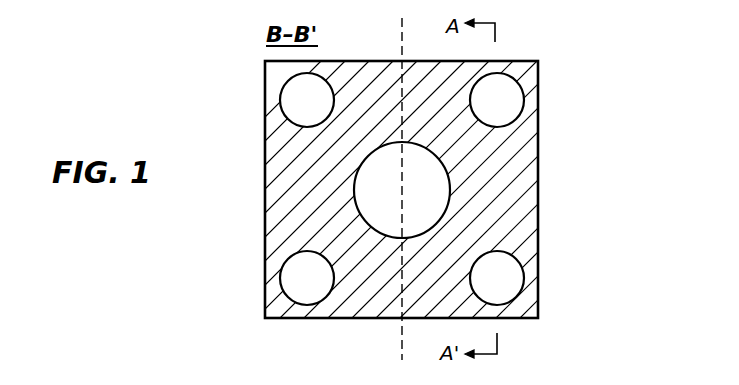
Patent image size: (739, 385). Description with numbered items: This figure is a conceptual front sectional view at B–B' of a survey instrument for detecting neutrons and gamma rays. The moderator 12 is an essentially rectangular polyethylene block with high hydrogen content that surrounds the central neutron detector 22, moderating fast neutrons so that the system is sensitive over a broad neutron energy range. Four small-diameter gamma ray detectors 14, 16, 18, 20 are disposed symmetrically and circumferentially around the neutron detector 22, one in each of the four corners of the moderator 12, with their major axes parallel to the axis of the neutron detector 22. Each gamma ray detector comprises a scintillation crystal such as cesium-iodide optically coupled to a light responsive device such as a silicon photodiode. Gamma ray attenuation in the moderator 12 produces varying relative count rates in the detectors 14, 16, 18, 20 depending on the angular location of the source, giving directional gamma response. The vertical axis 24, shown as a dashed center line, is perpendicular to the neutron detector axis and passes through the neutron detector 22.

The moderator 12 is at (352, 72).
The gamma ray detector 14 is at (285, 283).
The gamma ray detector 16 is at (293, 113).
The gamma ray detector 18 is at (509, 90).
The gamma ray detector 20 is at (512, 266).
The neutron detector 22 is at (399, 215).
The vertical axis 24 is at (403, 49).